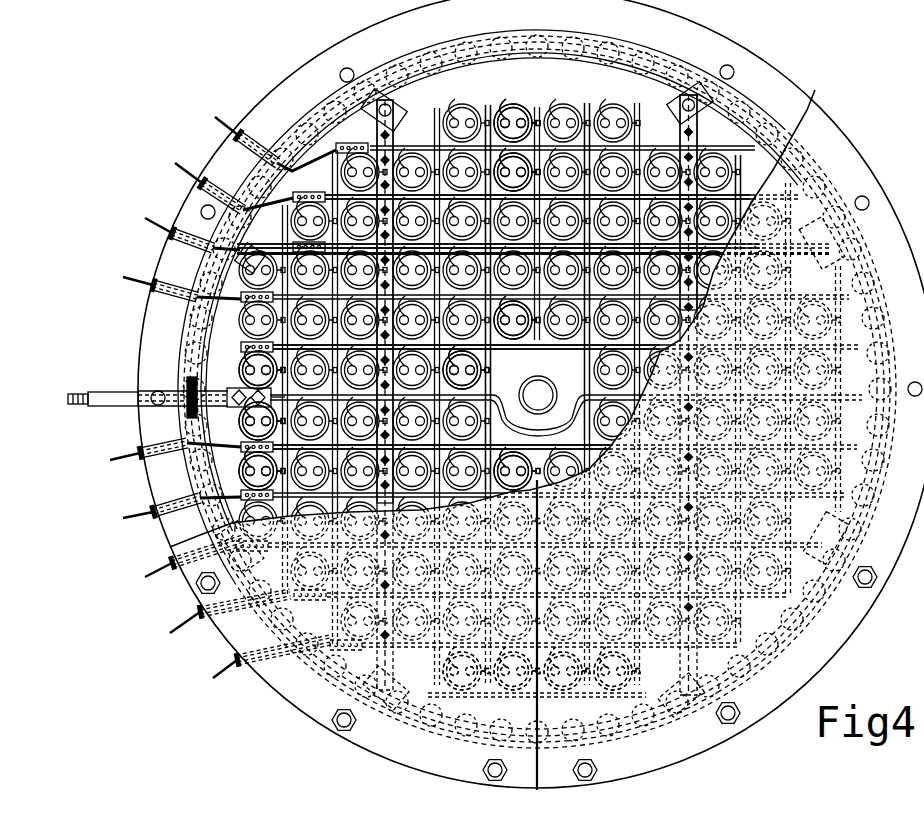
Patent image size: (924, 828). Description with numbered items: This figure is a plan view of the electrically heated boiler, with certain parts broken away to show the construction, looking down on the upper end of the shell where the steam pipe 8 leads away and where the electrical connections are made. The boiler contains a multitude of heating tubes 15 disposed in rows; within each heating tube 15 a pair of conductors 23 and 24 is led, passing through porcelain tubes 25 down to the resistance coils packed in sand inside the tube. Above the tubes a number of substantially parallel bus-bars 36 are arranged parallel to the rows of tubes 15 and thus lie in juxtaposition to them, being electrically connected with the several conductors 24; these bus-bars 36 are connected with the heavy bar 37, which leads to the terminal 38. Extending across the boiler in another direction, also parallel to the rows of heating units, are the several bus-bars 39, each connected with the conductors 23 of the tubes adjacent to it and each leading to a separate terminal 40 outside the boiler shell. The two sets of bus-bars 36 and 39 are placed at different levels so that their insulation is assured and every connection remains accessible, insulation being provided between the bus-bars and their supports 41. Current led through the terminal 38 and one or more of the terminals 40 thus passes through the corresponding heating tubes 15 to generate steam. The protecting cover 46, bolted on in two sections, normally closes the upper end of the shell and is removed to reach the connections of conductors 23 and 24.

The steam pipe 8 is at (538, 395).
The heating tube 15 is at (247, 371).
The conductor 23 is at (538, 153).
The conductor 24 is at (485, 235).
The porcelain tube 25 is at (249, 421).
The bus-bar 36 is at (487, 104).
The heavy bar 37 is at (581, 396).
The terminal 38 is at (74, 395).
The bus-bar 39 is at (535, 195).
The terminal 40 is at (219, 397).
The support 41 is at (394, 141).
The protecting cover 46 is at (541, 680).